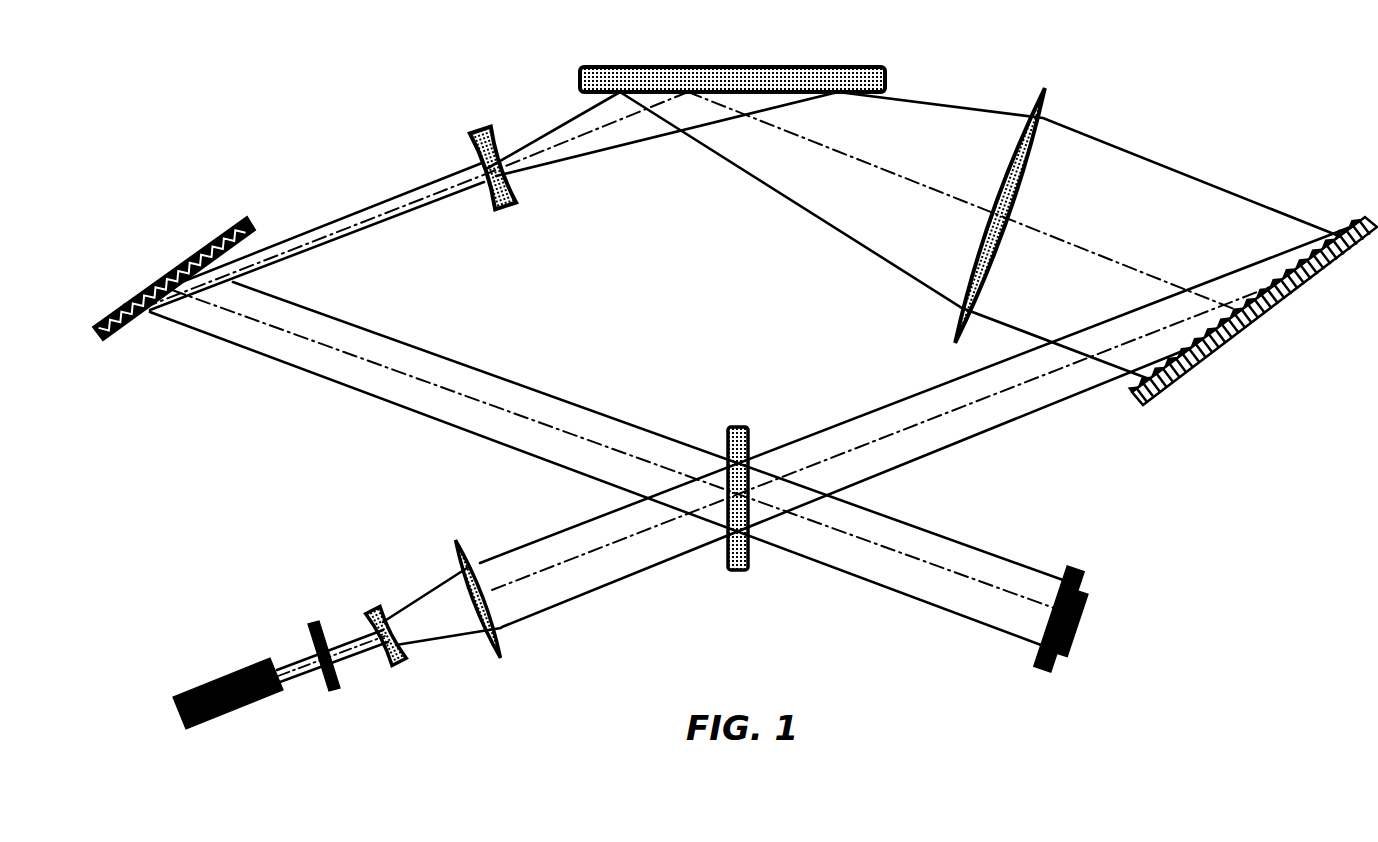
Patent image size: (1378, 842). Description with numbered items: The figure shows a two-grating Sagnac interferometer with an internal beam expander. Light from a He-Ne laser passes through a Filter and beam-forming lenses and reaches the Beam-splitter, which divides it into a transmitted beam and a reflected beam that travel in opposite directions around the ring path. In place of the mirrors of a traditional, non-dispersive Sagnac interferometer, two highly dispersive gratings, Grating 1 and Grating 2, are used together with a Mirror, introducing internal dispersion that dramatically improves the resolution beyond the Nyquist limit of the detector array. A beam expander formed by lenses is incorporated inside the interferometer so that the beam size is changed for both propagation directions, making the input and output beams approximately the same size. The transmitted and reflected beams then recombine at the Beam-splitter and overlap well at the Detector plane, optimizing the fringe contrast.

The mirror Mirror is at (732, 64).
The first grating Grating 1 is at (1253, 311).
The second grating Grating 2 is at (157, 278).
The beam splitter Beam-splitter is at (701, 520).
The detector Detector is at (1100, 619).
The filter Filter is at (334, 672).
The He-Ne laser He-Ne is at (228, 704).